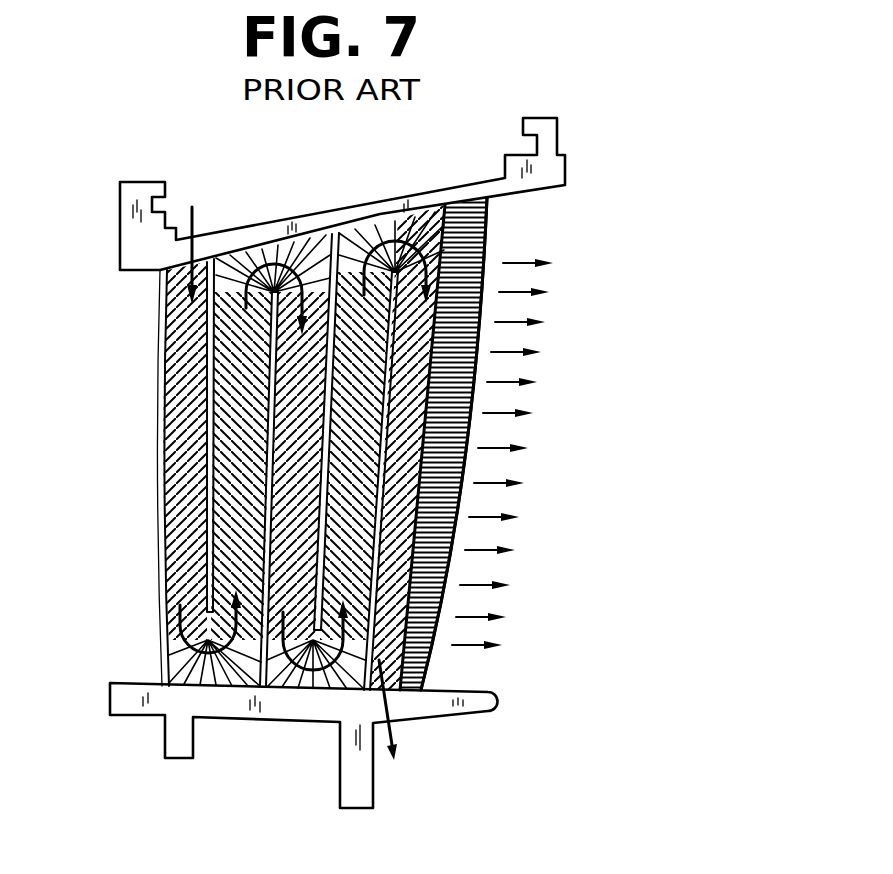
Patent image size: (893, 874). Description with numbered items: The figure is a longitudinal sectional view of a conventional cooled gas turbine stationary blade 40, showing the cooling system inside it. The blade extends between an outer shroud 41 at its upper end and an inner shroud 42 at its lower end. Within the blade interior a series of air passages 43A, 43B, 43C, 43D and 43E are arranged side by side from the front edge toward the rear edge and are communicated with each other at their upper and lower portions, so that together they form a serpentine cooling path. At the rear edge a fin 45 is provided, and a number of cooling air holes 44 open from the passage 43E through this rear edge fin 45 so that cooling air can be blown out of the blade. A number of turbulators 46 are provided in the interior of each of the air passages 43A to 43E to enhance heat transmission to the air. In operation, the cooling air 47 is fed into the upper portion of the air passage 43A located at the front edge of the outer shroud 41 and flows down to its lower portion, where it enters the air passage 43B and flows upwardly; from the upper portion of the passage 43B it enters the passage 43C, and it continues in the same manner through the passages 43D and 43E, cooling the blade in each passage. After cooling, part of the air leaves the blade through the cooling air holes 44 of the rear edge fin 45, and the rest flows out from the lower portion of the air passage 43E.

The stationary blade 40 is at (159, 366).
The outer shroud 41 is at (308, 219).
The inner shroud 42 is at (437, 702).
The air passage 43A is at (187, 485).
The air passage 43B is at (237, 508).
The air passage 43C is at (293, 532).
The air passage 43D is at (383, 640).
The air passage 43E is at (403, 667).
The cooling air holes 44 is at (457, 527).
The fin 45 is at (343, 556).
The turbulators 46 is at (182, 450).
The cooling air 47 is at (193, 228).